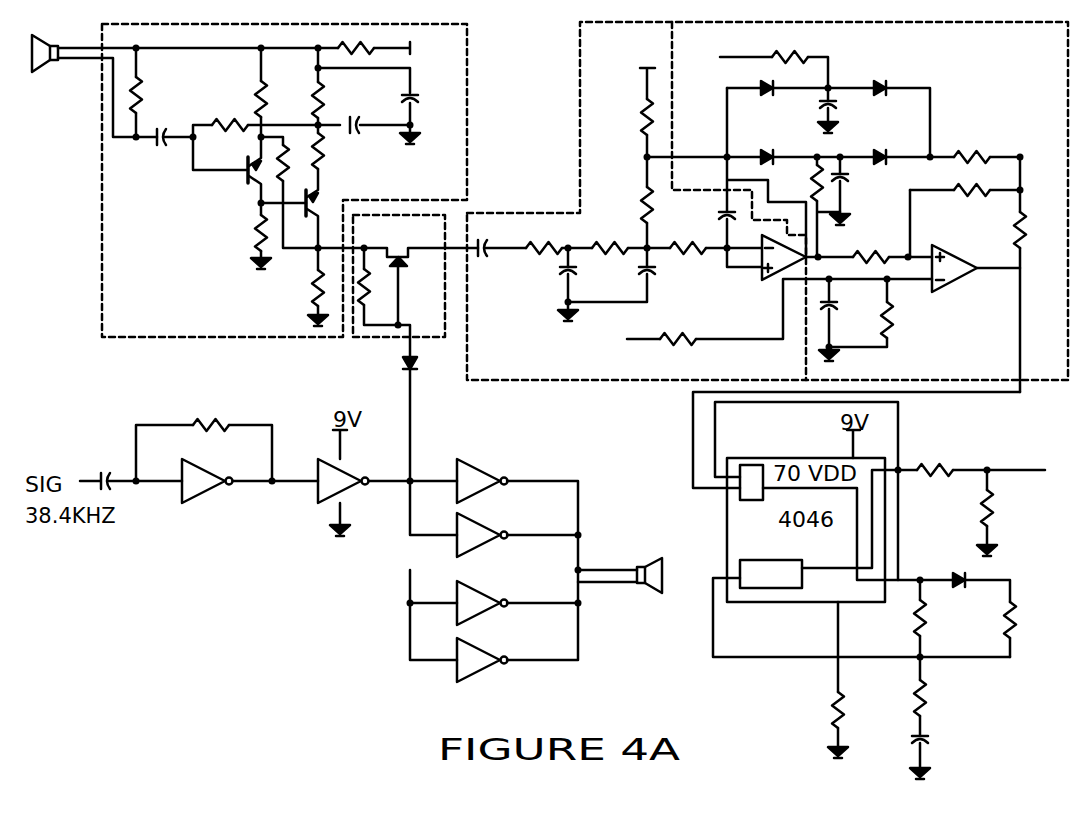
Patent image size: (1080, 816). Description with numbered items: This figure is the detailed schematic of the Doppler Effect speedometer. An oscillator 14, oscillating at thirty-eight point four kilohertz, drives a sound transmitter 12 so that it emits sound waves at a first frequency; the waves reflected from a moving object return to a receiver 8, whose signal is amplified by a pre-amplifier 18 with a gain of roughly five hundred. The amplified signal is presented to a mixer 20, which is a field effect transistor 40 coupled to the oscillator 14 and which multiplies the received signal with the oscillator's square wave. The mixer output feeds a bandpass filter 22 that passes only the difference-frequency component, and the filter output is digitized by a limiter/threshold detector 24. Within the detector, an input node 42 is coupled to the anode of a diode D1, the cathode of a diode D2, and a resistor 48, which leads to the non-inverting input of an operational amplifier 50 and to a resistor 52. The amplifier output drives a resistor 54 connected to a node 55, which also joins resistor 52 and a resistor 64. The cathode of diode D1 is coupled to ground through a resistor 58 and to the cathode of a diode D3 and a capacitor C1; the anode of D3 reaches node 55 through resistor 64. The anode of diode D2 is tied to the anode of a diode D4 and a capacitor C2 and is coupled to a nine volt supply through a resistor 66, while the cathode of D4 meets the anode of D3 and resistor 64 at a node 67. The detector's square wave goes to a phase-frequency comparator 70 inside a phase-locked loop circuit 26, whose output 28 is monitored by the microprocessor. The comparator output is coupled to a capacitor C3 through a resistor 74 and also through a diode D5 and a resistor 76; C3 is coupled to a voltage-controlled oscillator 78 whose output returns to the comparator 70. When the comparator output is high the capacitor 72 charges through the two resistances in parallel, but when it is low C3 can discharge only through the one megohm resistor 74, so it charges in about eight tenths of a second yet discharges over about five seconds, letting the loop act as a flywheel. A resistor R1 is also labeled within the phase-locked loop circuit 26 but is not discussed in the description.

The receiver 8 is at (84, 86).
The pre-amplifier 18 is at (284, 180).
The mixer 20 is at (399, 348).
The field effect transistor 40 is at (421, 273).
The bandpass filter 22 is at (767, 207).
The limiter/threshold detector 24 is at (837, 201).
The input node 42 is at (806, 257).
The resistor 48 is at (869, 245).
The operational amplifier 50 is at (976, 259).
The resistor 52 is at (983, 203).
The resistor 54 is at (1037, 235).
The node 55 is at (1039, 189).
The resistor 58 is at (809, 207).
The resistor 64 is at (972, 145).
The resistor 66 is at (774, 57).
The node 67 is at (932, 177).
The sound transmitter 12 is at (620, 591).
The oscillator 14 is at (226, 475).
The phase-locked loop circuit 26 is at (856, 486).
The output 28 is at (979, 501).
The phase-frequency comparator 70 is at (830, 520).
The capacitor 72 is at (863, 725).
The resistor 74 is at (904, 630).
The resistor 76 is at (1028, 629).
The voltage-controlled oscillator 78 is at (819, 529).
The diode D1 is at (763, 143).
The diode D2 is at (777, 79).
The diode D3 is at (885, 143).
The diode D4 is at (879, 105).
The diode D5 is at (965, 598).
The capacitor C1 is at (860, 191).
The capacitor C2 is at (812, 110).
The capacitor C3 is at (939, 729).
The resistor R1 is at (837, 636).